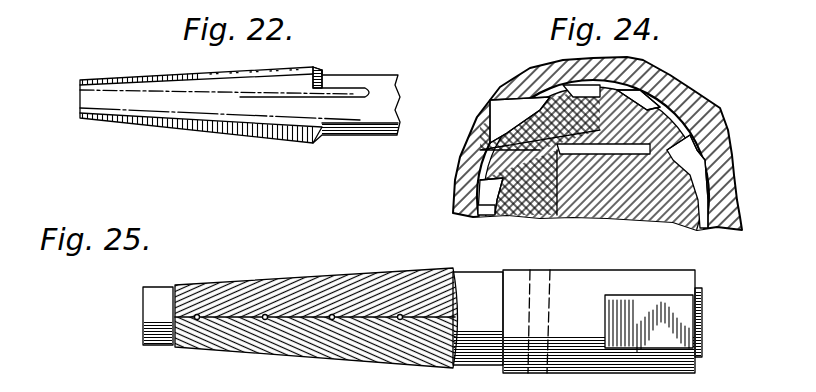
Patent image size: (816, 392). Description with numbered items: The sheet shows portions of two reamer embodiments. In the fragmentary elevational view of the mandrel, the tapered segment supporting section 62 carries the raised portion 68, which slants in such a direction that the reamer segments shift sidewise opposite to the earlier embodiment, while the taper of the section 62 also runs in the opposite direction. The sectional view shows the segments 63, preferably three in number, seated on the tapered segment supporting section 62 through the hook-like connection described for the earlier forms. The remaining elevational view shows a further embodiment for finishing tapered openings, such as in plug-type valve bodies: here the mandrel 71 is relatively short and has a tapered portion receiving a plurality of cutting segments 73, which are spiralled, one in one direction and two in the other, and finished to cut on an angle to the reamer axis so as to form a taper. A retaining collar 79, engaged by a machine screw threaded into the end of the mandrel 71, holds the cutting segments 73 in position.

In FIG. 22, the tapered segment supporting section 62 is at (297, 73).
In FIG. 24, the tapered segment supporting section 62 is at (587, 203).
In FIG. 24, the segments 63 is at (647, 123).
In FIG. 22, the raised portion 68 is at (185, 107).
In FIG. 25, the mandrel 71 is at (702, 316).
In FIG. 25, the cutting segments 73 is at (332, 282).
In FIG. 25, the retaining collar 79 is at (152, 300).